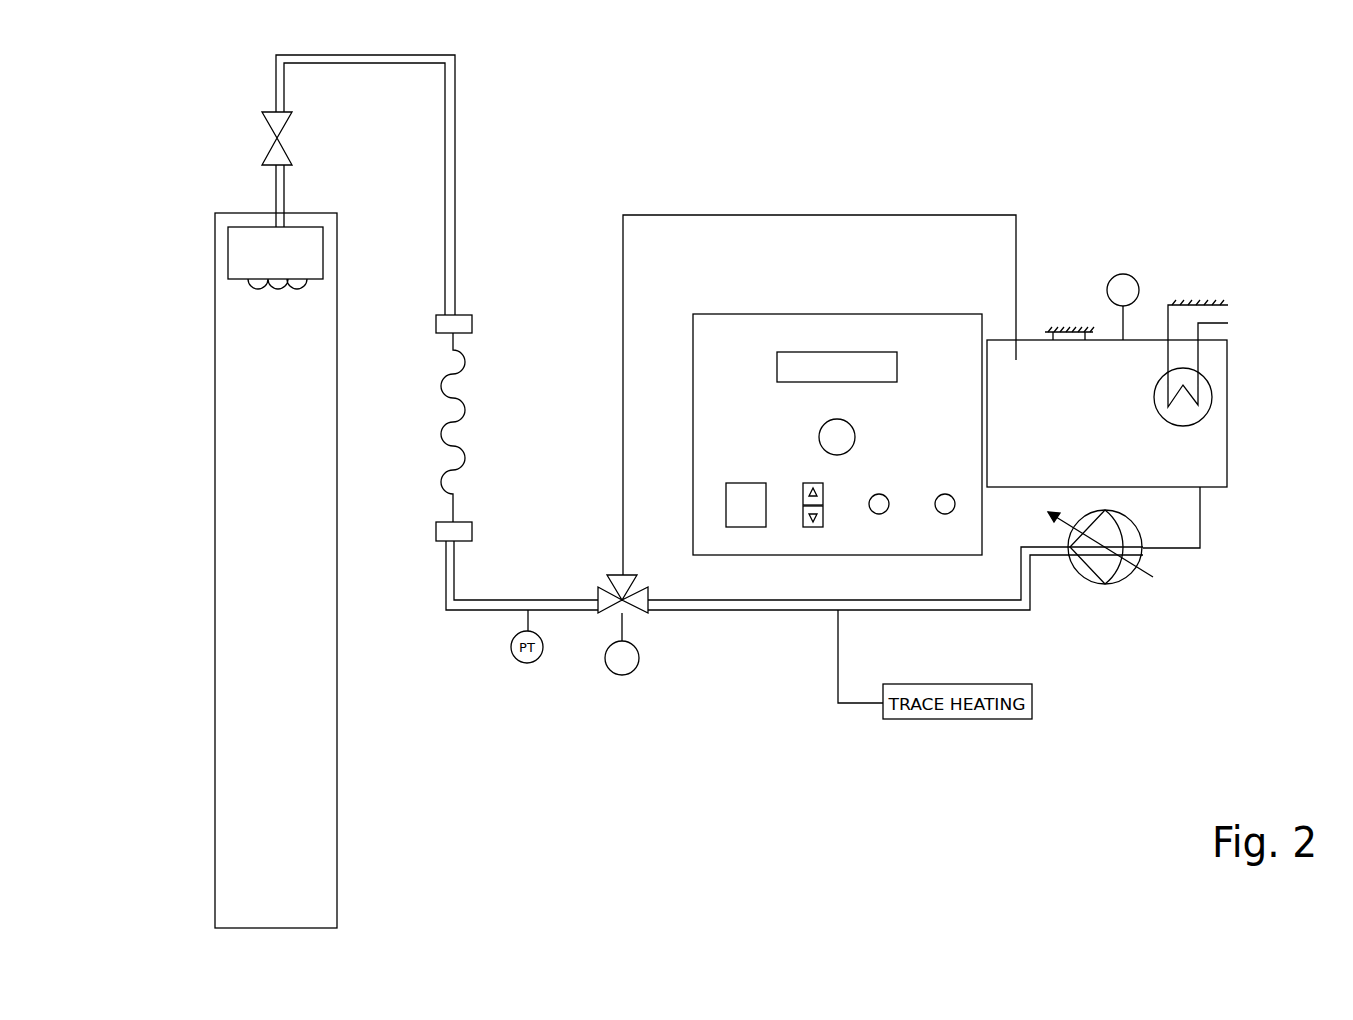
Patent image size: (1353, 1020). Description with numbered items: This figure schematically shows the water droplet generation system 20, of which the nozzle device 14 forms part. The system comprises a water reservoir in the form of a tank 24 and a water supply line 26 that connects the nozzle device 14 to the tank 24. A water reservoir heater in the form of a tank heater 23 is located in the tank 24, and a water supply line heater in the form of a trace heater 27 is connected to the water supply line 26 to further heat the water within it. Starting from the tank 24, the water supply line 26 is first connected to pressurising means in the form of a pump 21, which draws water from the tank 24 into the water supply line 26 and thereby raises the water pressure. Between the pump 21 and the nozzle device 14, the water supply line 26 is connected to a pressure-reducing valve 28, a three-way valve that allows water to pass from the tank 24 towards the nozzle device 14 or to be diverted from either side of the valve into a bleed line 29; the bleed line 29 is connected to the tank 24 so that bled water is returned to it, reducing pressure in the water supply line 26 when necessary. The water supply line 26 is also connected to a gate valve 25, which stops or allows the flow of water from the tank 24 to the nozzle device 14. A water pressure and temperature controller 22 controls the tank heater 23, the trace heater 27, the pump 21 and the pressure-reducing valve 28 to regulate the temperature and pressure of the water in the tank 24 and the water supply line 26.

The nozzle device 14 is at (243, 253).
The water droplet generation system 20 is at (838, 108).
The pump 21 is at (1128, 578).
The water pressure and temperature controller 22 is at (925, 325).
The tank heater 23 is at (1205, 398).
The tank 24 is at (1227, 422).
The gate valve 25 is at (260, 125).
The water supply line 26 is at (455, 122).
The trace heater 27 is at (748, 610).
The pressure-reducing valve 28 is at (628, 588).
The bleed line 29 is at (978, 215).